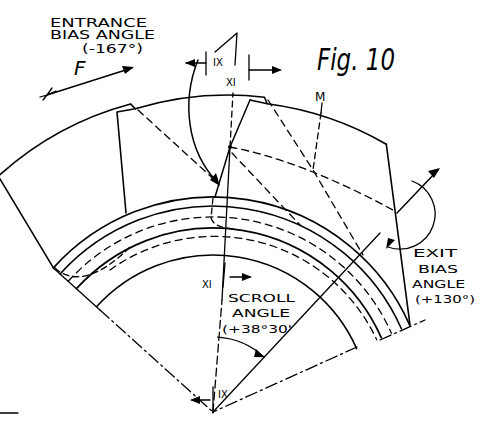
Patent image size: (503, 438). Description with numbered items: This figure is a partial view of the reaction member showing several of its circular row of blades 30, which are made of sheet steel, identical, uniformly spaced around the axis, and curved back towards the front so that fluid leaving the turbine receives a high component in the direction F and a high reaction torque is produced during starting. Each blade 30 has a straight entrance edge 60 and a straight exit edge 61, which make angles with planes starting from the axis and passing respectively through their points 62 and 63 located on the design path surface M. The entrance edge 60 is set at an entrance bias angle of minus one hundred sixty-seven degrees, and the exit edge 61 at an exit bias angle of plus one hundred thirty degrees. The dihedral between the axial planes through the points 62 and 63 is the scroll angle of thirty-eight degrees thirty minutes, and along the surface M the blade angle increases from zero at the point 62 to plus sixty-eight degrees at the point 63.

The blade 30 is at (68, 141).
The entrance edge 60 is at (233, 118).
The exit edge 61 is at (392, 163).
The point 62 is at (230, 147).
The point 63 is at (397, 211).